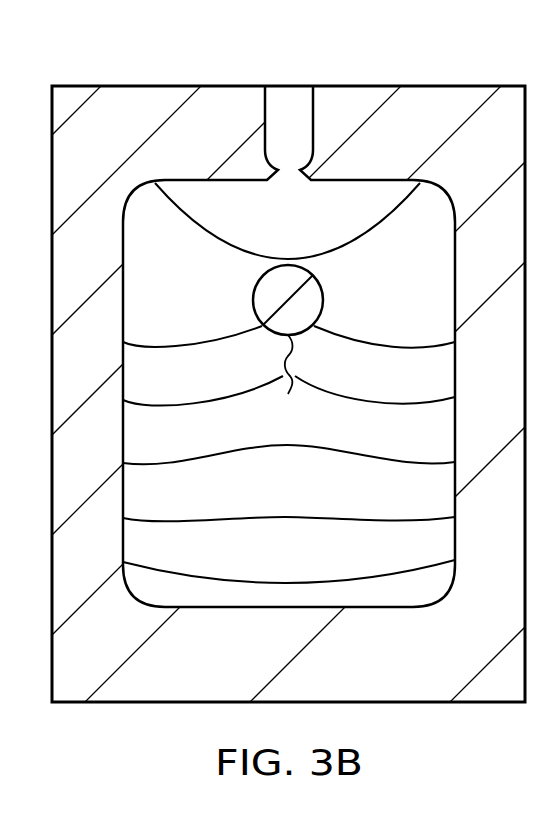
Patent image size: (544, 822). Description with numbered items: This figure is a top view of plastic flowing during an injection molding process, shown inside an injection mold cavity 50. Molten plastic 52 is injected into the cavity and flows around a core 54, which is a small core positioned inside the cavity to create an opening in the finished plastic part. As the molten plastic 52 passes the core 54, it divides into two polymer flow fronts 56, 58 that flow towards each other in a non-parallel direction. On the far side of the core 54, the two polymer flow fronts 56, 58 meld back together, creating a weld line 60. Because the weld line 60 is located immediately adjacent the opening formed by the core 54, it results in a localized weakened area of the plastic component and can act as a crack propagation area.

The injection mold cavity 50 is at (430, 117).
The molten plastic 52 is at (376, 196).
The core 54 is at (324, 298).
The polymer flow front 56 is at (430, 344).
The polymer flow front 58 is at (148, 346).
The weld line 60 is at (282, 392).